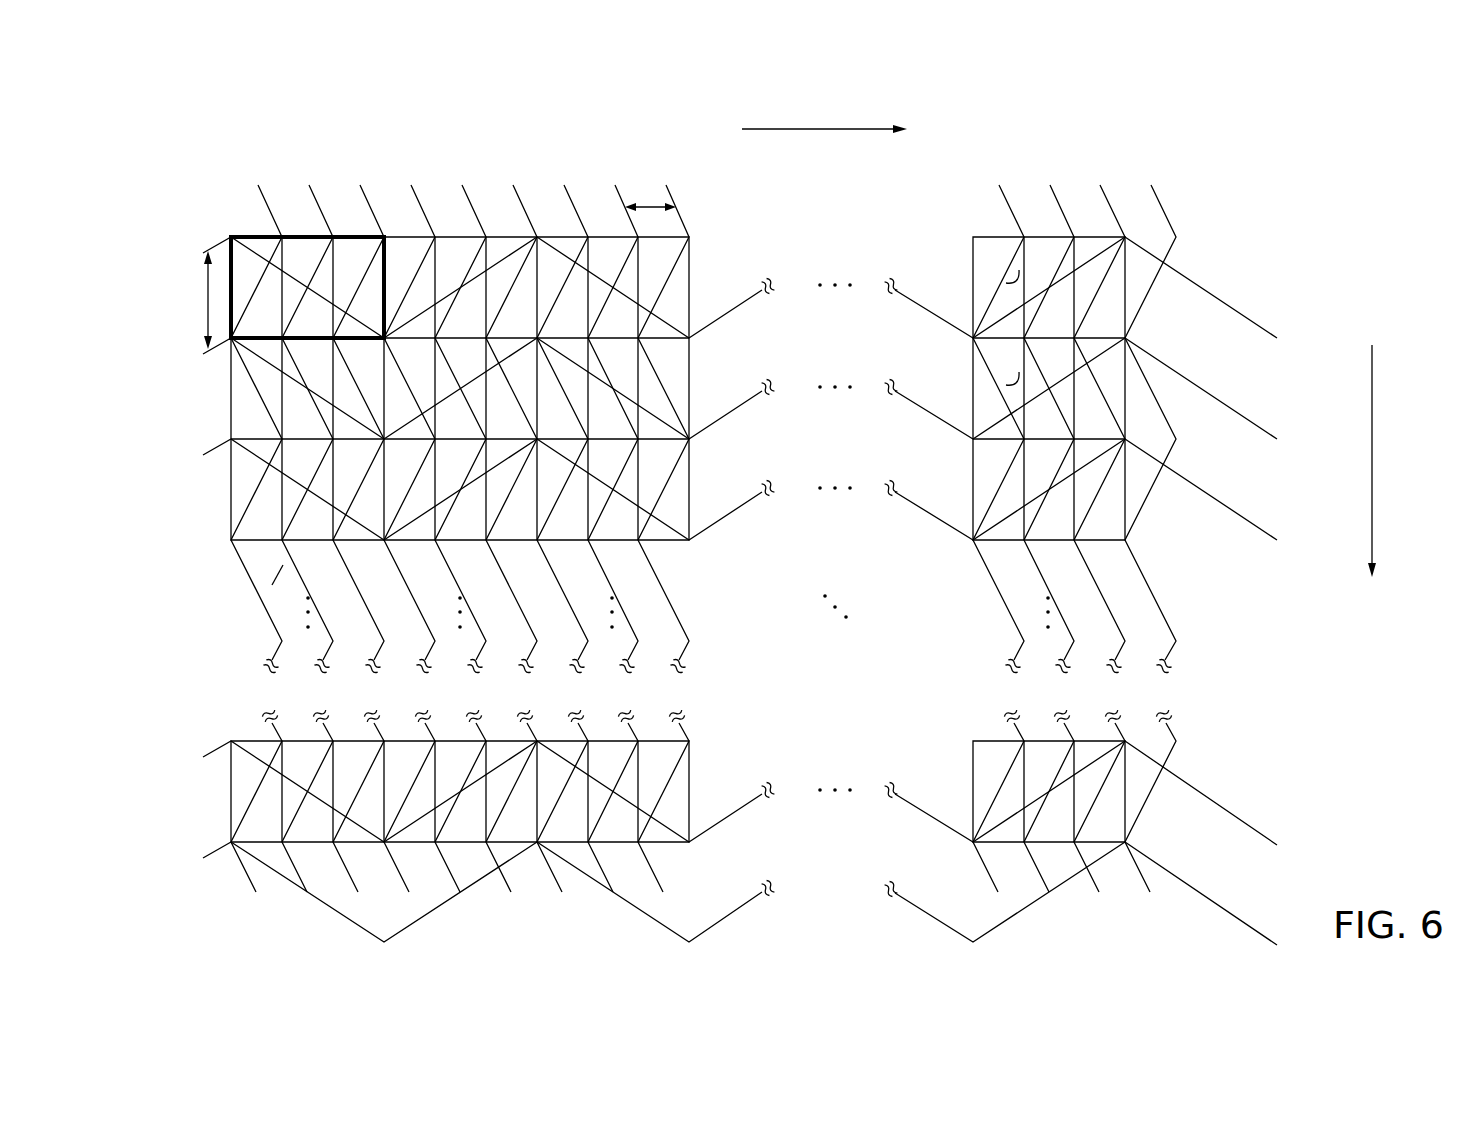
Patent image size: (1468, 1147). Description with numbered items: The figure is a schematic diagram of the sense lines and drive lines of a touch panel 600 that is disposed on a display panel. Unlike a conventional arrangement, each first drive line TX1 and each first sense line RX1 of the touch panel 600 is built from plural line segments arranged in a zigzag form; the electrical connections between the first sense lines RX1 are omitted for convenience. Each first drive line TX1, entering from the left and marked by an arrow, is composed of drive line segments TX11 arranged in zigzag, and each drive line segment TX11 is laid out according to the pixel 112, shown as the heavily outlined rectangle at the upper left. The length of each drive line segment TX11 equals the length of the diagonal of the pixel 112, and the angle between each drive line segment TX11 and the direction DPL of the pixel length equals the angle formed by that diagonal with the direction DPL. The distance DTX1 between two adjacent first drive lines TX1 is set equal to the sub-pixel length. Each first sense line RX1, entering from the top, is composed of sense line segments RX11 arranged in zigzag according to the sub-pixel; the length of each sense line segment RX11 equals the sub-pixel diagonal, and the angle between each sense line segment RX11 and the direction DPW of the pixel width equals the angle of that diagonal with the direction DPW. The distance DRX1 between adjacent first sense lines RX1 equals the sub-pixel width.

The touch panel 600 is at (150, 121).
The pixel 112 is at (228, 237).
The first sense line RX1 is at (676, 478).
The sense line segment RX11 is at (1149, 155).
The first drive line TX1 is at (167, 858).
The drive line segment TX11 is at (220, 850).
The distance between adjacent first drive lines DTX1 is at (170, 300).
The distance between adjacent first sense lines DRX1 is at (666, 190).
The direction of the pixel length DPL is at (824, 115).
The direction of the pixel width DPW is at (1407, 461).